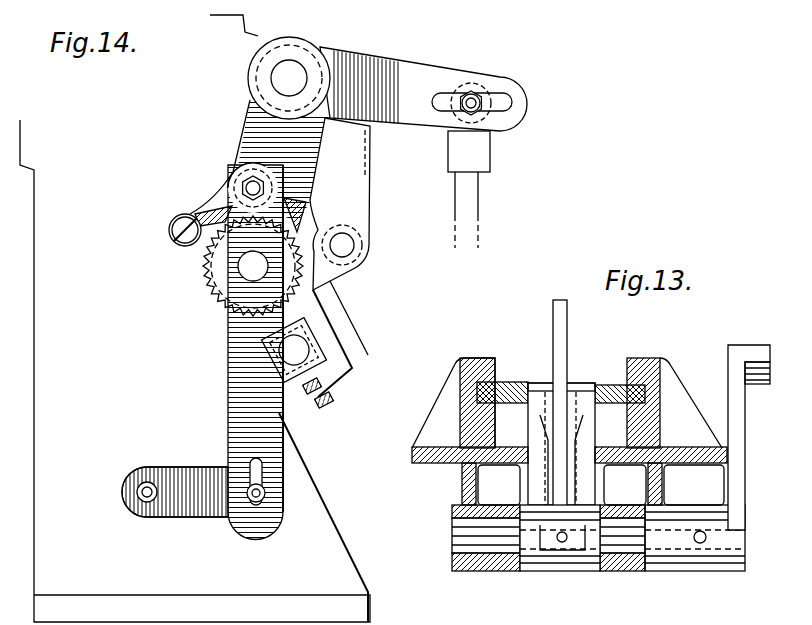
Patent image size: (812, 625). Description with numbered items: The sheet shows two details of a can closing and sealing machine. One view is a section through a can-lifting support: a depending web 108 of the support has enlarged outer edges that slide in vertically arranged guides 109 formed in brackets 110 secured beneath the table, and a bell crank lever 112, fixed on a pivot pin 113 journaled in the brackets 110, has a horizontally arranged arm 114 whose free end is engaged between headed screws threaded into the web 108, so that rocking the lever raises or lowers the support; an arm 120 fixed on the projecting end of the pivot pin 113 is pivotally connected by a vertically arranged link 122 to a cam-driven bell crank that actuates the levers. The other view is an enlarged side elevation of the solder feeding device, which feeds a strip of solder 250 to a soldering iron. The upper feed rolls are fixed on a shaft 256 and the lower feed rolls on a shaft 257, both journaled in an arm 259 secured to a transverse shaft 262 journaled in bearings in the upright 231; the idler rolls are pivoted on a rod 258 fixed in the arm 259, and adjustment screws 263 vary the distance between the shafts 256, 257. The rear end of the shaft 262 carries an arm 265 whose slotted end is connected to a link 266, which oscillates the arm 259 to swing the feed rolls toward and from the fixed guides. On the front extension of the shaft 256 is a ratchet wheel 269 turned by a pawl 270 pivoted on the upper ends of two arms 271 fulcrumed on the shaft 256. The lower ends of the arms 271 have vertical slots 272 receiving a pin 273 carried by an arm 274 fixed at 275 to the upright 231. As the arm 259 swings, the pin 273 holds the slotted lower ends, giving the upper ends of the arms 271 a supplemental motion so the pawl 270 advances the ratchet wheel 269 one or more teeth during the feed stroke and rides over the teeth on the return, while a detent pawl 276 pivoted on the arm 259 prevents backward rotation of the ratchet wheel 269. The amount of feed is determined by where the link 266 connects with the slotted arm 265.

In FIG. 14, the upright 231 is at (318, 530).
In FIG. 14, the strip of solder 250 is at (366, 204).
In FIG. 14, the shaft 256 is at (254, 268).
In FIG. 14, the shaft 257 is at (303, 350).
In FIG. 14, the rod 258 is at (345, 246).
In FIG. 14, the arm 259 is at (240, 143).
In FIG. 14, the transverse shaft 262 is at (292, 75).
In FIG. 14, the adjustment screws 263 is at (323, 401).
In FIG. 14, the arm 265 is at (413, 75).
In FIG. 14, the link 266 is at (468, 212).
In FIG. 14, the ratchet wheel 269 is at (230, 277).
In FIG. 14, the pawl 270 is at (298, 216).
In FIG. 14, the arms 271 is at (240, 369).
In FIG. 14, the slots 272 is at (258, 465).
In FIG. 14, the pin 273 is at (270, 492).
In FIG. 14, the arm 274 is at (217, 508).
In FIG. 14, the fixing point 275 is at (143, 500).
In FIG. 14, the detent pawl 276 is at (204, 214).
In FIG. 13, the depending web 108 is at (512, 388).
In FIG. 13, the guides 109 is at (478, 360).
In FIG. 13, the brackets 110 is at (470, 488).
In FIG. 13, the bell crank lever 112 is at (533, 538).
In FIG. 13, the pivot pin 113 is at (463, 538).
In FIG. 13, the horizontally arranged arm 114 is at (590, 497).
In FIG. 13, the arm 120 is at (740, 482).
In FIG. 13, the vertically arranged link 122 is at (770, 345).